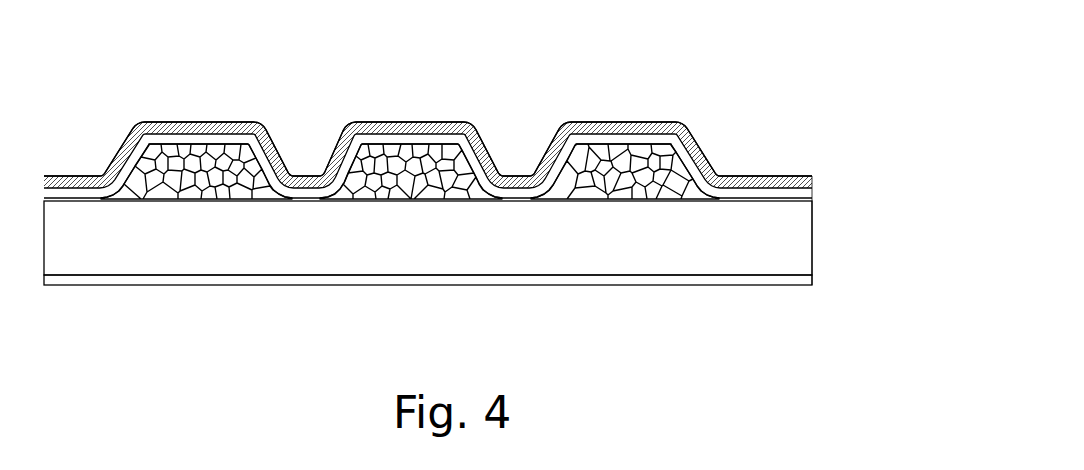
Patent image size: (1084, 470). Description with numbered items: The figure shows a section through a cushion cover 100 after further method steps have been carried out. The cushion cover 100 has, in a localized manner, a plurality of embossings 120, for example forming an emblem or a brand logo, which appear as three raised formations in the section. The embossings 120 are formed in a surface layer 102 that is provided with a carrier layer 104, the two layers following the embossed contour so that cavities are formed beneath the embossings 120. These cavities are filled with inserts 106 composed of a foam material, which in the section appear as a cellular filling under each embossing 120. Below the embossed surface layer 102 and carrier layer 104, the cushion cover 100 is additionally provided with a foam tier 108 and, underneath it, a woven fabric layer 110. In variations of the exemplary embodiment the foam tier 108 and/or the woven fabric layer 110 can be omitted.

The cushion cover 100 is at (486, 173).
The surface layer 102 is at (813, 182).
The carrier layer 104 is at (813, 196).
The inserts 106 is at (622, 160).
The foam tier 108 is at (807, 248).
The woven fabric layer 110 is at (808, 280).
The embossings 120 is at (182, 122).